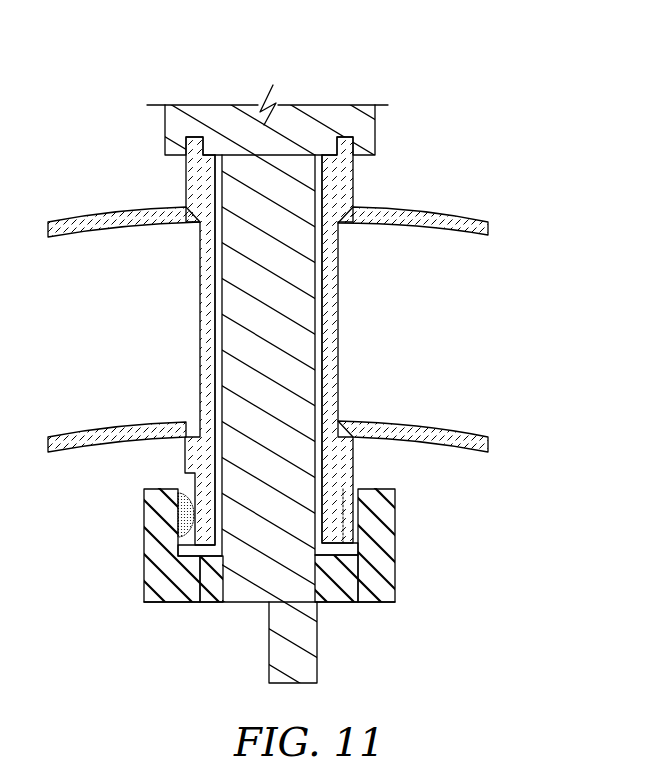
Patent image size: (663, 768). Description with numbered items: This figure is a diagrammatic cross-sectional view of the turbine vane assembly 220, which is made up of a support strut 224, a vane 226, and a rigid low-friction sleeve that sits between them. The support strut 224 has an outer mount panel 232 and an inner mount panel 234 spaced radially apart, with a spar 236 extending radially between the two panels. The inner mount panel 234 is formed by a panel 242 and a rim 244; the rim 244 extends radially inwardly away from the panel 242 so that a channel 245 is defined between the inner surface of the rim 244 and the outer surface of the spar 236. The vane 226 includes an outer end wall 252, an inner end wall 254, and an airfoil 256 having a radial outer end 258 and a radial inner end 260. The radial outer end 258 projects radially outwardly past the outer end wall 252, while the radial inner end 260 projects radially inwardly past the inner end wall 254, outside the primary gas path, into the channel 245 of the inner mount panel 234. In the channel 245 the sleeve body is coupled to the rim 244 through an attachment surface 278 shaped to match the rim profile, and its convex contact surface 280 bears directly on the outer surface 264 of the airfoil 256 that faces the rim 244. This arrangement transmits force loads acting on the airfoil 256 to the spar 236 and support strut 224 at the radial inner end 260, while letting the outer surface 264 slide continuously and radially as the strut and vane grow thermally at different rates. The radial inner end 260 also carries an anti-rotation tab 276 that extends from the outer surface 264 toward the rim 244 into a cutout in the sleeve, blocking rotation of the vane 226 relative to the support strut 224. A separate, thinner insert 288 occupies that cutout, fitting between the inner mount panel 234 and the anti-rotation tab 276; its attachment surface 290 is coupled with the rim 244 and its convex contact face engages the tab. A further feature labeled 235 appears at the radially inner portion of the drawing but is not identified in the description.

The turbine vane assembly 220 is at (122, 76).
The support strut 224 is at (240, 627).
The vane 226 is at (372, 341).
The outer mount panel 232 is at (384, 128).
The inner mount panel 234 is at (143, 567).
The shaft lower end 235 is at (316, 670).
The spar 236 is at (215, 328).
The panel 242 is at (212, 602).
The rim 244 is at (143, 535).
The channel 245 is at (202, 600).
The outer end wall 252 is at (422, 206).
The inner end wall 254 is at (426, 416).
The airfoil 256 is at (338, 307).
The radial outer end 258 is at (370, 178).
The radial inner end 260 is at (360, 459).
The outer surface 264 is at (200, 286).
The anti-rotation tab 276 is at (362, 515).
The attachment surface 278 is at (150, 494).
The contact surface 280 is at (206, 510).
The insert 288 is at (368, 603).
The attachment surface 290 is at (362, 525).